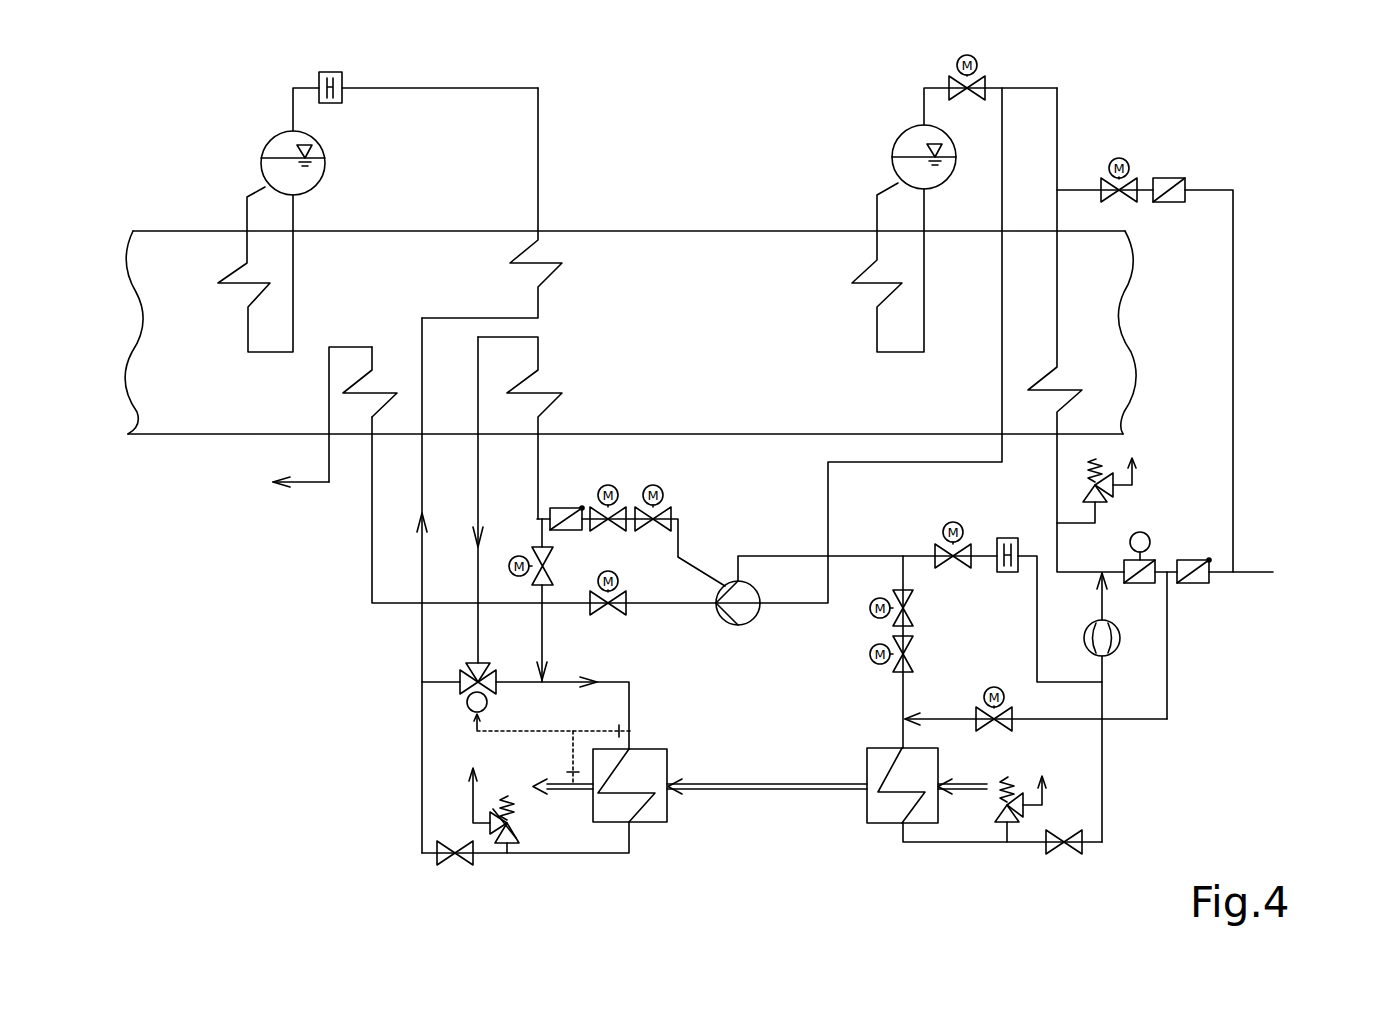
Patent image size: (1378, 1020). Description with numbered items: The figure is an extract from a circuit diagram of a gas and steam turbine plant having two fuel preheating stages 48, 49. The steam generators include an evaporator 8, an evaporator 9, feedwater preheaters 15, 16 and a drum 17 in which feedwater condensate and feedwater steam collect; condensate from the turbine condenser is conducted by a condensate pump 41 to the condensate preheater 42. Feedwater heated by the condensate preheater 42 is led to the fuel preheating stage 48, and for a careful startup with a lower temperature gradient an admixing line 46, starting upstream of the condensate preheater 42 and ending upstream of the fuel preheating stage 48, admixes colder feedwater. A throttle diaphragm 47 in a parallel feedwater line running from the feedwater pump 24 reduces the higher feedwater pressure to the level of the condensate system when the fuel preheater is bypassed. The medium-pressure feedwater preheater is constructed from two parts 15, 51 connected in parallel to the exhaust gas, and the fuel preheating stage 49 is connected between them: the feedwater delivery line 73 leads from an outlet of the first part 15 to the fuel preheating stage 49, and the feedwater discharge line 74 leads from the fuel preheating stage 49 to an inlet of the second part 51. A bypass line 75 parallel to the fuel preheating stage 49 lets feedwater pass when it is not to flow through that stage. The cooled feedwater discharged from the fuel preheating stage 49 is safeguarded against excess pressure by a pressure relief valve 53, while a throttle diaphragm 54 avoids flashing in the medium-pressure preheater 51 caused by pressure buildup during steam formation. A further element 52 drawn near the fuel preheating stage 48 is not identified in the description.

The evaporator 8 is at (877, 325).
The evaporator 9 is at (245, 337).
The medium-pressure feedwater preheater 15 is at (540, 353).
The feedwater preheater 16 is at (328, 383).
The drum 17 is at (898, 143).
The feedwater pump 24 is at (730, 618).
The condensate pump 41 is at (1283, 573).
The condensate preheater 42 is at (1058, 307).
The admixing line 46 is at (1168, 672).
The throttle diaphragm 47 is at (1005, 573).
The fuel preheating stage 48 is at (1097, 487).
The fuel preheating stage 49 is at (658, 825).
The medium-pressure preheater 51 is at (540, 308).
The pressure relief valve 52 is at (1005, 805).
The pressure relief valve 53 is at (516, 838).
The throttle diaphragm 54 is at (340, 70).
The feedwater delivery line 73 is at (632, 693).
The feedwater discharge line 74 is at (420, 645).
The bypass line 75 is at (437, 682).